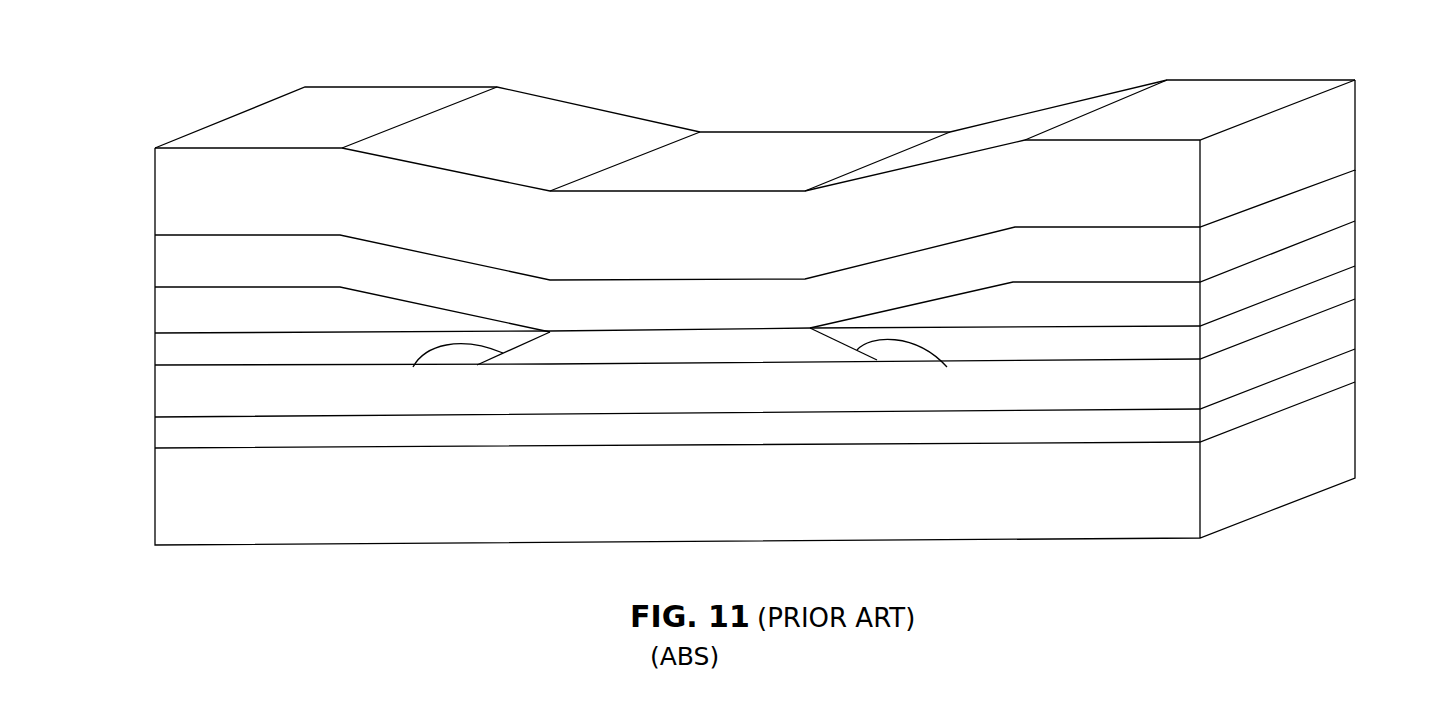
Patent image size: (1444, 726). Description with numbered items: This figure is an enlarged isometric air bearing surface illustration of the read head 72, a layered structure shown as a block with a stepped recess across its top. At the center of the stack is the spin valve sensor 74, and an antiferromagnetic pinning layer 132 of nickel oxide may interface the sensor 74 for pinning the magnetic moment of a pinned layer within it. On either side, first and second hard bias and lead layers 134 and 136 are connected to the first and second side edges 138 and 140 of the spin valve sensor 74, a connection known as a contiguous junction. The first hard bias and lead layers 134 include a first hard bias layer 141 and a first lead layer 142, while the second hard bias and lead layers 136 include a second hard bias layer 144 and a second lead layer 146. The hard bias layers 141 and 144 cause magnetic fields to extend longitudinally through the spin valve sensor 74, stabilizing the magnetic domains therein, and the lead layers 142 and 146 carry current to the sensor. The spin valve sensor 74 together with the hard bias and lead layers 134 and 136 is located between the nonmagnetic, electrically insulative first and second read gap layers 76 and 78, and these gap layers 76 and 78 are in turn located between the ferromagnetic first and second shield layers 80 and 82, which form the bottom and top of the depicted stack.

The read head 72 is at (753, 327).
The spin valve sensor 74 is at (585, 324).
The first read gap layer 76 is at (447, 437).
The second read gap layer 78 is at (407, 265).
The first shield layer 80 is at (331, 523).
The second shield layer 82 is at (607, 118).
The antiferromagnetic pinning layer 132 is at (878, 392).
The first hard bias and lead layers 134 is at (312, 326).
The second hard bias and lead layers 136 is at (991, 312).
The first side edge 138 is at (442, 375).
The second side edge 140 is at (916, 370).
The first hard bias layer 141 is at (198, 352).
The first lead layer 142 is at (199, 300).
The second hard bias layer 144 is at (1147, 345).
The second lead layer 146 is at (1148, 292).